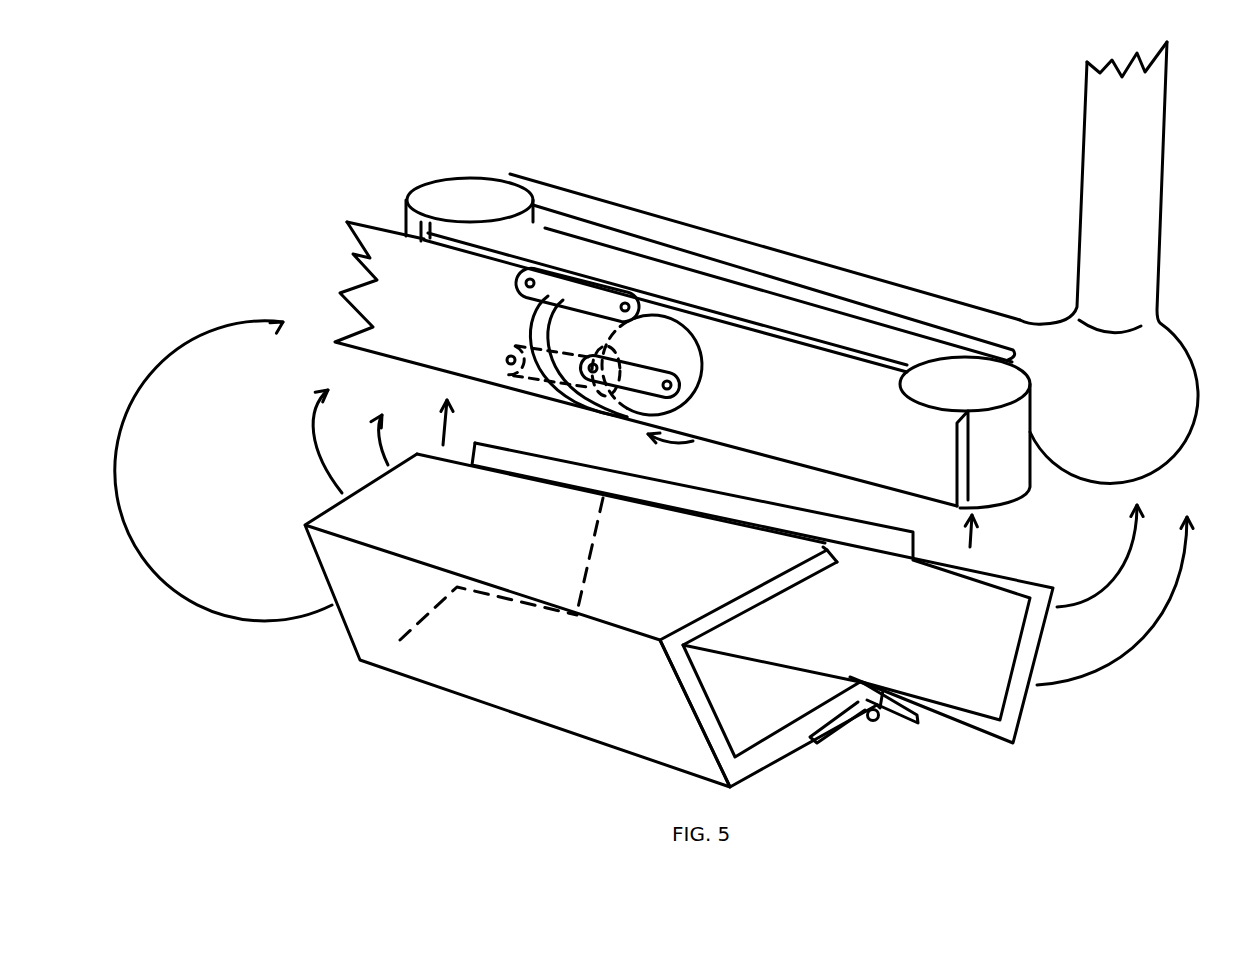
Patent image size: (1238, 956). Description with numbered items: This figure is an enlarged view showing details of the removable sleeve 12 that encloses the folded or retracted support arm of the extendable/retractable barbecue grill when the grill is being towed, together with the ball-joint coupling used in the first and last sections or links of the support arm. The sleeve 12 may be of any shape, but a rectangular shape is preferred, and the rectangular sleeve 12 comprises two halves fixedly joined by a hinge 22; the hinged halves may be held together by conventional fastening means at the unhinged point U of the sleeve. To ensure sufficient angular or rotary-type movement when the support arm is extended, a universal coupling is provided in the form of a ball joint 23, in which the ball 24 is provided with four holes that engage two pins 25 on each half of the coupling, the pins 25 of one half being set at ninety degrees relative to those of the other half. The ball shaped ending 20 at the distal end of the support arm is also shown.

The removable sleeve 12 is at (382, 680).
The ball shaped ending 20 is at (1194, 405).
The hinge 22 is at (873, 722).
The ball joint 23 is at (637, 285).
The ball 24 is at (670, 352).
The pins 25 is at (513, 287).
The unhinged point U is at (878, 524).